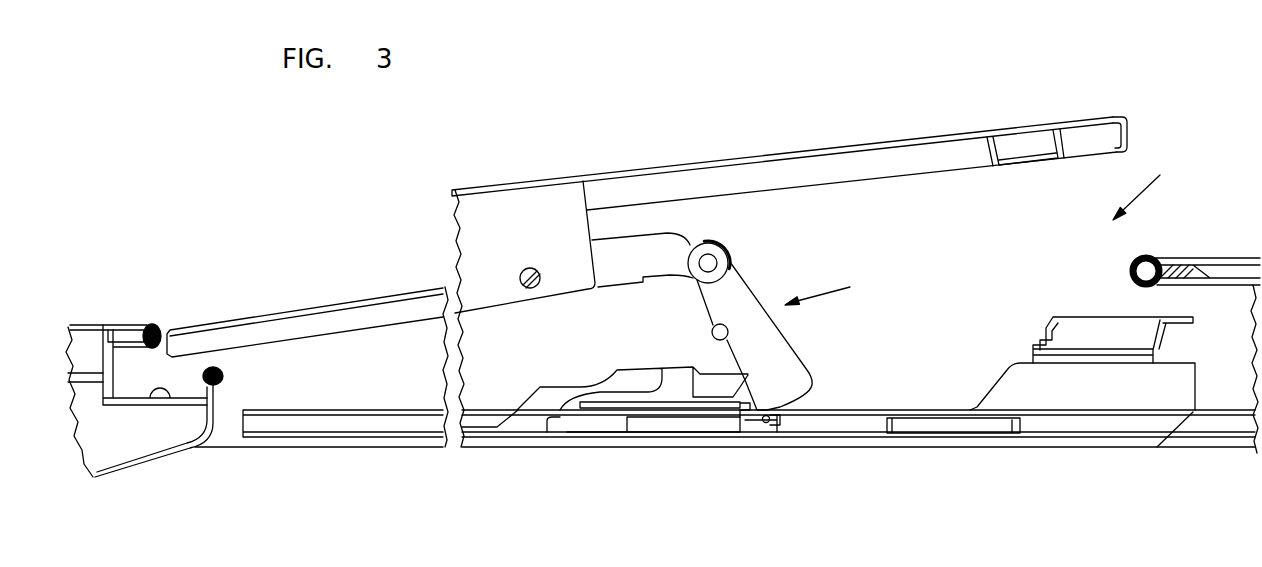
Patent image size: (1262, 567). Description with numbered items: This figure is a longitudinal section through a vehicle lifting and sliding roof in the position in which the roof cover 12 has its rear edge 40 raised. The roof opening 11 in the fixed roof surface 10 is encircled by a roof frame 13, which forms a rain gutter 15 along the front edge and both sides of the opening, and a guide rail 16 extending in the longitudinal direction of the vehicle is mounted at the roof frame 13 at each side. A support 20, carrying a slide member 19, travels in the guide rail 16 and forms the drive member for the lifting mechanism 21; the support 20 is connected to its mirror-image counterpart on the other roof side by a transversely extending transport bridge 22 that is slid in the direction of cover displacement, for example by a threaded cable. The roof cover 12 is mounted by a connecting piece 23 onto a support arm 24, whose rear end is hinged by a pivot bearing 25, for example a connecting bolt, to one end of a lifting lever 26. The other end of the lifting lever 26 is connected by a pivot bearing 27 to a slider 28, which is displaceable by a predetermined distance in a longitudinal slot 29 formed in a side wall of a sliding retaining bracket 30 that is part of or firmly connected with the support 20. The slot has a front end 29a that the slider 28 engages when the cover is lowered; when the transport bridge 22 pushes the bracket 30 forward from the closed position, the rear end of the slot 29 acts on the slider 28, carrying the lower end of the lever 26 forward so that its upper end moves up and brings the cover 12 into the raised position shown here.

The fixed roof surface 10 is at (1230, 258).
The roof opening 11 is at (1152, 186).
The roof cover 12 is at (735, 160).
The roof frame 13 is at (87, 387).
The rain gutter 15 is at (170, 400).
The guide rail 16 is at (357, 423).
The slide member 19 is at (957, 427).
The support 20 is at (1118, 387).
The lifting mechanism 21 is at (835, 286).
The transport bridge 22 is at (1092, 325).
The connecting piece 23 is at (507, 227).
The support arm 24 is at (642, 250).
The pivot bearing 25 is at (708, 263).
The lifting lever 26 is at (785, 370).
The pivot bearing 27 is at (768, 423).
The slider 28 is at (753, 425).
The longitudinal slot 29 is at (667, 403).
The front end of longitudinal slot 29a is at (578, 405).
The sliding retaining bracket 30 is at (623, 382).
The roof cover rear edge 40 is at (1113, 116).